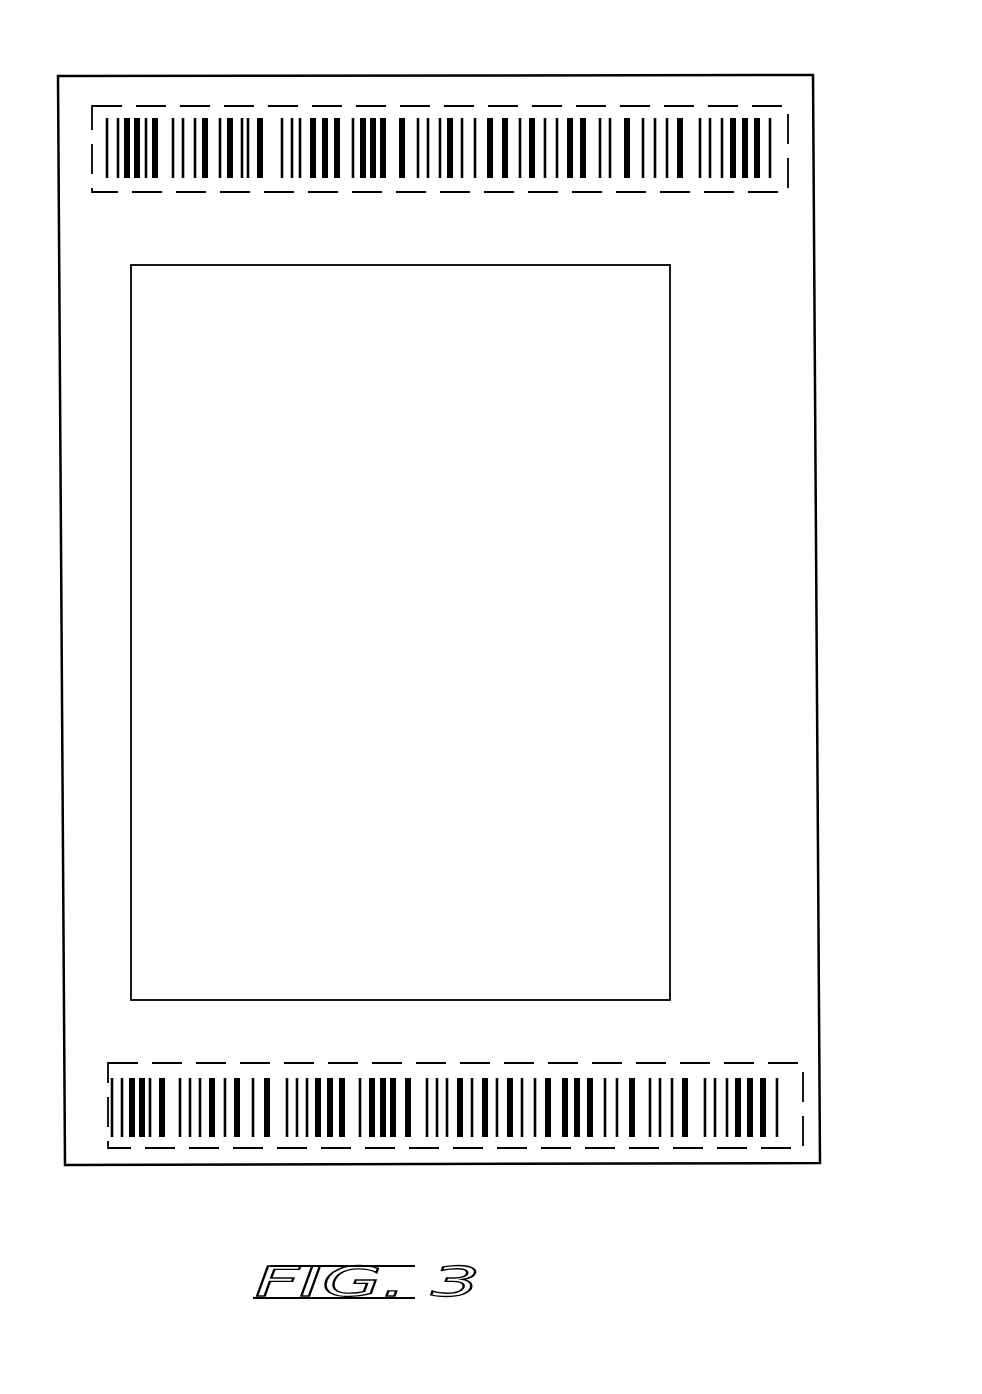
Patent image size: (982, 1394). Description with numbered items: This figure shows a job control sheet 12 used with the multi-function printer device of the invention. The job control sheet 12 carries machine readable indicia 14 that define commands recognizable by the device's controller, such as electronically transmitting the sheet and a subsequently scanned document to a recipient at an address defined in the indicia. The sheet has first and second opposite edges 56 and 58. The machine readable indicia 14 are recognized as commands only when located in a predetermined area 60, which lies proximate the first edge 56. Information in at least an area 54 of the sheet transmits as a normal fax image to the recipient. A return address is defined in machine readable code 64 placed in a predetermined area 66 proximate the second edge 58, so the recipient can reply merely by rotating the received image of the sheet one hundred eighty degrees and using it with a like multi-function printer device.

The job control sheet 12 is at (637, 1178).
The machine readable indicia 14 is at (580, 120).
The area 54 is at (670, 665).
The first edge 56 is at (465, 131).
The second edge 58 is at (500, 1111).
The predetermined area 60 is at (733, 98).
The machine readable code 64 is at (765, 1090).
The predetermined area 66 is at (661, 1056).